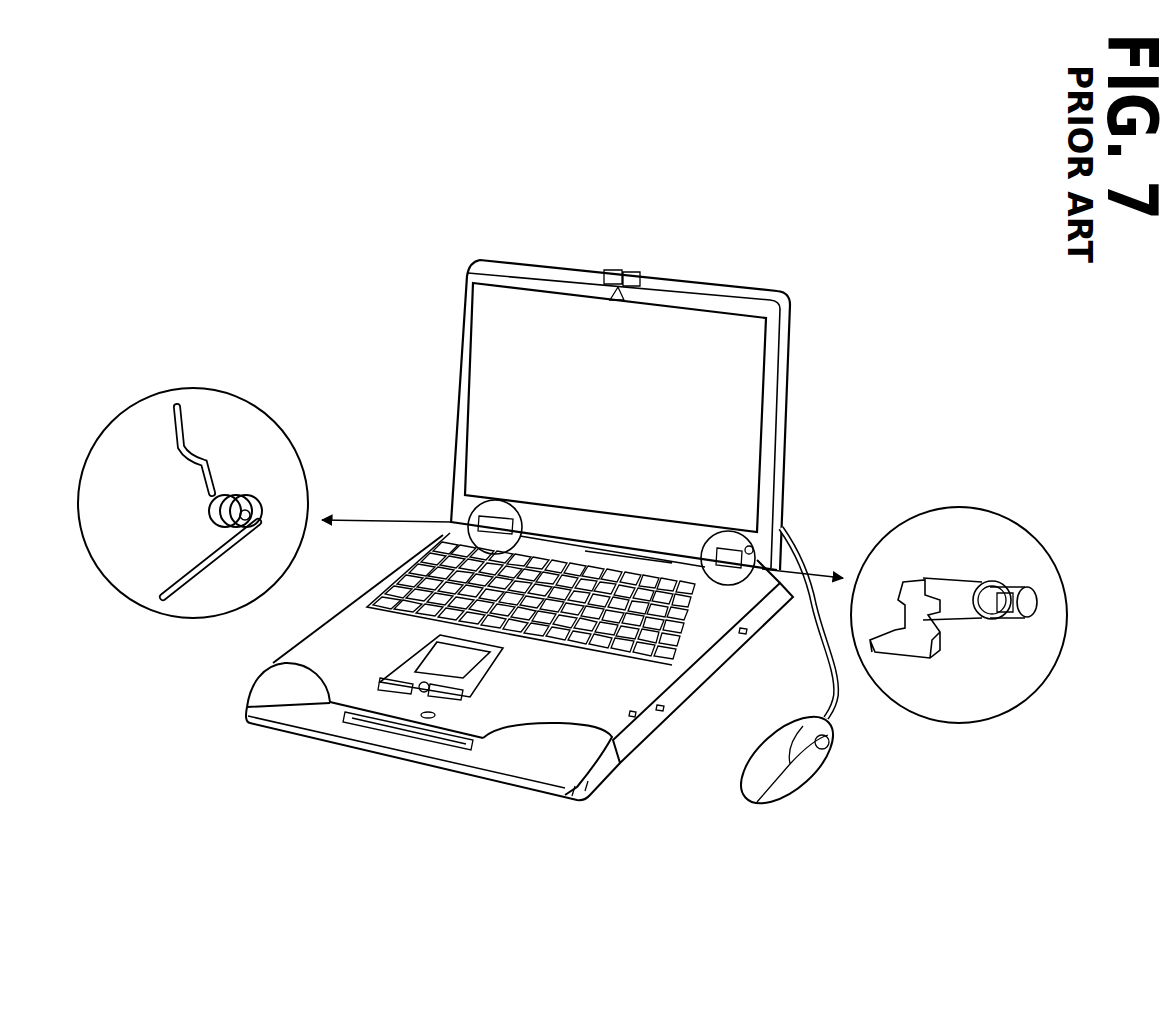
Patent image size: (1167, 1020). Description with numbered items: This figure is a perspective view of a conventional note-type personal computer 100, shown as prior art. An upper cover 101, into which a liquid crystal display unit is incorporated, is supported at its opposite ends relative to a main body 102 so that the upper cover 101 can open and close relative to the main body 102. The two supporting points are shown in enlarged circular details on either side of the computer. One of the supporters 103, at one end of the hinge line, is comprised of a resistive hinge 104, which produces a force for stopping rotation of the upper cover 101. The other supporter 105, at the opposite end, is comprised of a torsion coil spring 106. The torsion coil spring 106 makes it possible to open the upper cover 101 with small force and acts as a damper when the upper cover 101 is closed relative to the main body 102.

The note-type personal computer 100 is at (632, 174).
The upper cover 101 is at (790, 354).
The main body 102 is at (340, 653).
The supporter 103 is at (973, 498).
The resistive hinge 104 is at (987, 581).
The supporter 105 is at (262, 400).
The torsion coil spring 106 is at (226, 462).